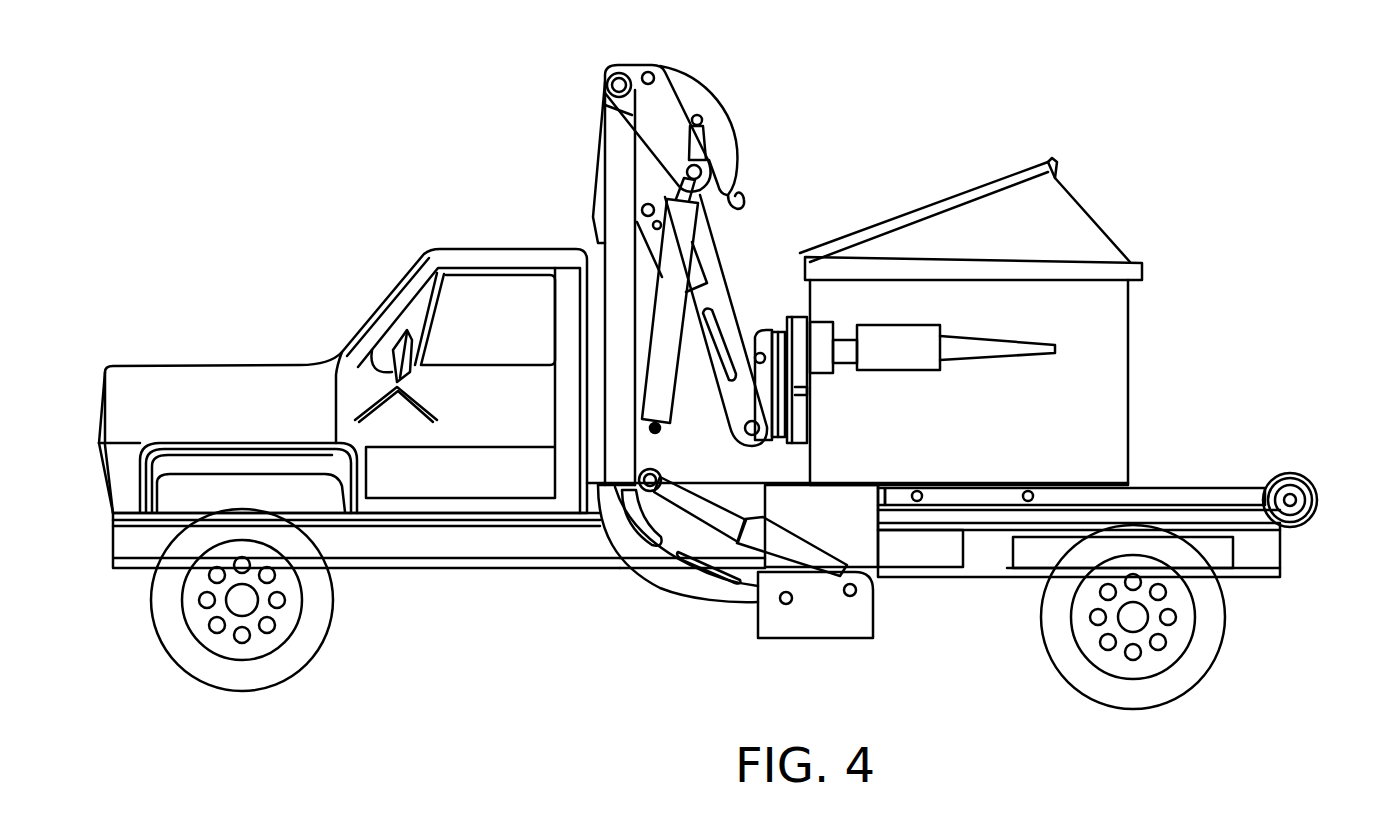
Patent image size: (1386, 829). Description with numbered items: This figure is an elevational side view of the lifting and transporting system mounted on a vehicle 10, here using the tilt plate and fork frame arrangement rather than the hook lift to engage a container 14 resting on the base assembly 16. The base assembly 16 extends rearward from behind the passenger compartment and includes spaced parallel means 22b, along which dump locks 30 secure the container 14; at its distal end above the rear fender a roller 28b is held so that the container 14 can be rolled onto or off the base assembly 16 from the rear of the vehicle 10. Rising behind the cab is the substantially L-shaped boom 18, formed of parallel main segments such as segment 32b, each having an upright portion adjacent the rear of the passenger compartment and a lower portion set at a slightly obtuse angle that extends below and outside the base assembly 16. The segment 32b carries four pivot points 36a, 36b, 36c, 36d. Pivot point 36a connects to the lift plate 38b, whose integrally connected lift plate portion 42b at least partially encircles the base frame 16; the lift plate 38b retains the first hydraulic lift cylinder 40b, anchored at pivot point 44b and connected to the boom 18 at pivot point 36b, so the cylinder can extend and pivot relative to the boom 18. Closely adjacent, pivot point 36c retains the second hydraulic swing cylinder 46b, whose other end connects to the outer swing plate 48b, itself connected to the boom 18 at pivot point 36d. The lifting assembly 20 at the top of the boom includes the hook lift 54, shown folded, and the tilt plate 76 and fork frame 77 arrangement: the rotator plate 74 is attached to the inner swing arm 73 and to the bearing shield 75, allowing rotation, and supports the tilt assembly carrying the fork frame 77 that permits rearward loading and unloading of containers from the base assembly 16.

The vehicle 10 is at (478, 228).
The container 14 is at (1120, 340).
The base assembly 16 is at (1147, 460).
The substantially L-shaped boom 18 is at (607, 243).
The lifting assembly 20 is at (612, 57).
The parallel means 22b is at (1072, 492).
The roller 28b is at (1305, 482).
The dump locks 30 is at (920, 488).
The main segment 32b is at (650, 471).
The pivot point 36a is at (786, 606).
The pivot point 36b is at (600, 485).
The pivot point 36c is at (660, 433).
The pivot point 36d is at (608, 85).
The lift plate 38b is at (850, 640).
The first hydraulic lift cylinder 40b is at (727, 597).
The lift plate portion 42b is at (855, 531).
The pivot point 44b is at (858, 593).
The second hydraulic swing cylinder 46b is at (640, 368).
The outer swing plate 48b is at (632, 115).
The hook lift 54 is at (683, 95).
The inner swing arm 73 is at (713, 242).
The rotator plate 74 is at (745, 330).
The bearing shield 75 is at (774, 440).
The tilt plate 76 is at (791, 317).
The fork frame 77 is at (1000, 345).